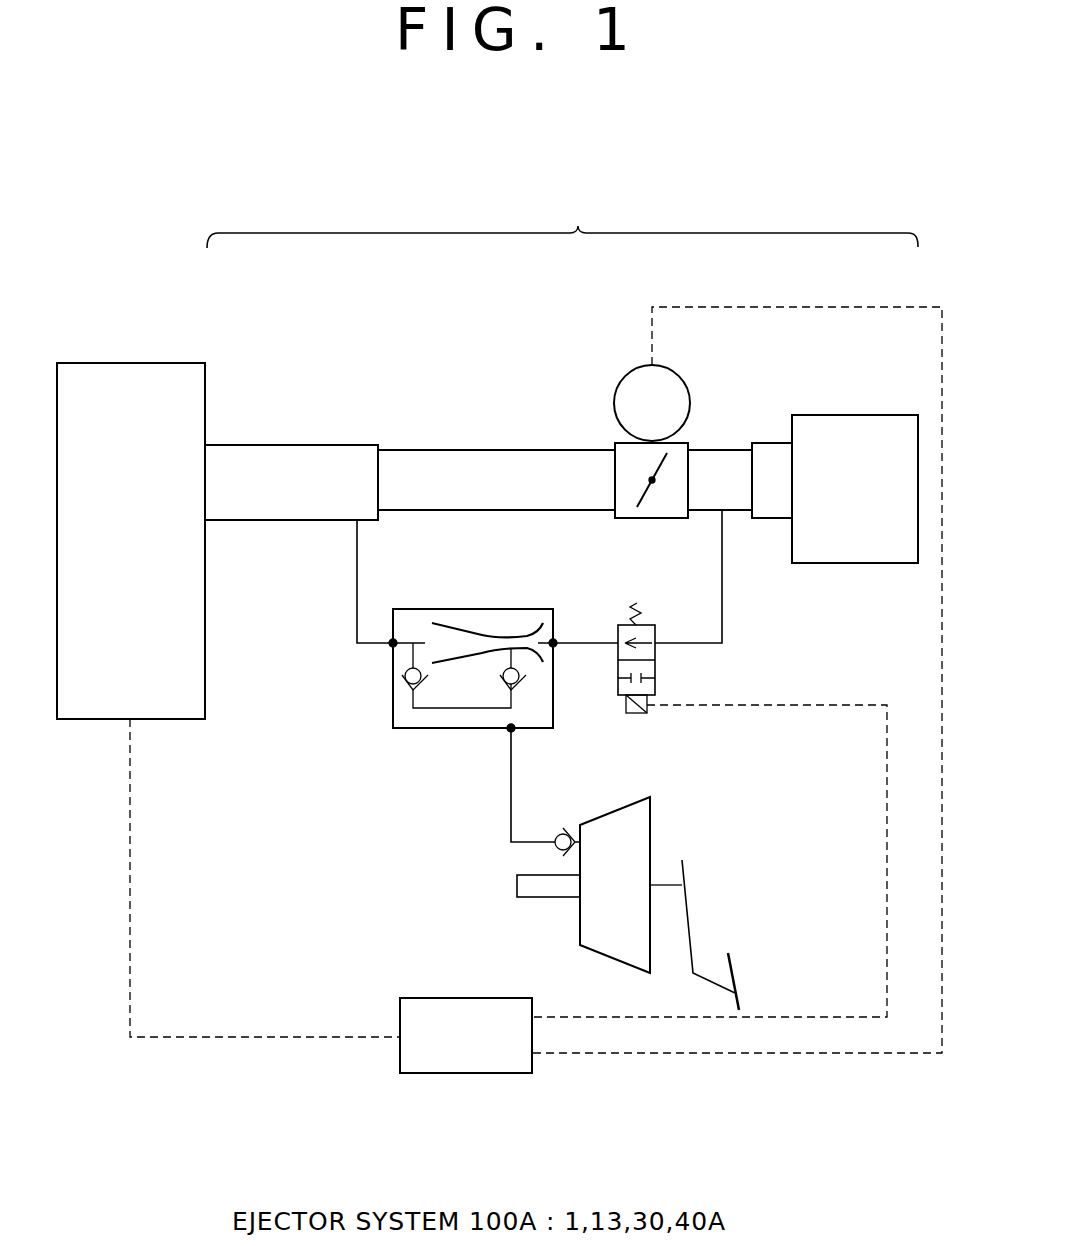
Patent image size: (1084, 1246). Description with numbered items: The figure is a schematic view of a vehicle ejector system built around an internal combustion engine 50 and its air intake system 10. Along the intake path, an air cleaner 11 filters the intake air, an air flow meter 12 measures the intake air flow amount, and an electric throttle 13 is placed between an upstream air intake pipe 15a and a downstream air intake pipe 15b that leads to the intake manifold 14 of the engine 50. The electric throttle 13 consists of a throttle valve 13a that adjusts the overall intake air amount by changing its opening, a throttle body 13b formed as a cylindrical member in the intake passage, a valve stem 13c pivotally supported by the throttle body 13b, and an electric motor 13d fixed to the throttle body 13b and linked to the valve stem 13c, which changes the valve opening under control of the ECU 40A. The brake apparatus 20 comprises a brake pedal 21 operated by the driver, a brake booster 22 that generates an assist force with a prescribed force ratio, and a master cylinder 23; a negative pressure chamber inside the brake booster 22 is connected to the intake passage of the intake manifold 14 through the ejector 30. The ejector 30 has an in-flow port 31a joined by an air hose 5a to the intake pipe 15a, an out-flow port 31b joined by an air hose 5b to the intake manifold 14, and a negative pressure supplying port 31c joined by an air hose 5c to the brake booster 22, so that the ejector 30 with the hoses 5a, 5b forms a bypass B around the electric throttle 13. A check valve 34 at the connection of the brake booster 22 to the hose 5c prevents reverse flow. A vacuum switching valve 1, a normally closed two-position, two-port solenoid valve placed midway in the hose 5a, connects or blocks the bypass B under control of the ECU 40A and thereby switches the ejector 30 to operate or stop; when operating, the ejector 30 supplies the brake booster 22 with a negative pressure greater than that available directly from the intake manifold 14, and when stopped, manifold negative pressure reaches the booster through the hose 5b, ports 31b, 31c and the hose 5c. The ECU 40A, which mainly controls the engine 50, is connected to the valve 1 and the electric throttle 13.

The internal combustion engine 50 is at (130, 363).
The intake manifold 14 is at (300, 445).
The air intake pipe 15b is at (435, 450).
The electric throttle 13 is at (490, 330).
The throttle valve 13a is at (636, 498).
The throttle body 13b is at (637, 505).
The valve stem 13c is at (652, 478).
The electric motor 13d is at (635, 370).
The air intake pipe 15a is at (708, 445).
The air flow meter 12 is at (765, 443).
The air cleaner 11 is at (837, 415).
The air intake system 10 is at (562, 222).
The ejector 30 is at (485, 609).
The in-flow port 31a is at (555, 641).
The out-flow port 31b is at (393, 645).
The negative pressure supplying port 31c is at (509, 729).
The air hose 5b is at (357, 585).
The air hose 5a is at (722, 578).
The vacuum switching valve 1 is at (655, 660).
The bypass B is at (742, 640).
The air hose 5c is at (512, 818).
The check valve 34 is at (563, 832).
The brake booster 22 is at (652, 830).
The master cylinder 23 is at (517, 885).
The brake pedal 21 is at (735, 967).
The brake apparatus 20 is at (430, 922).
The ECU 40A is at (437, 1075).